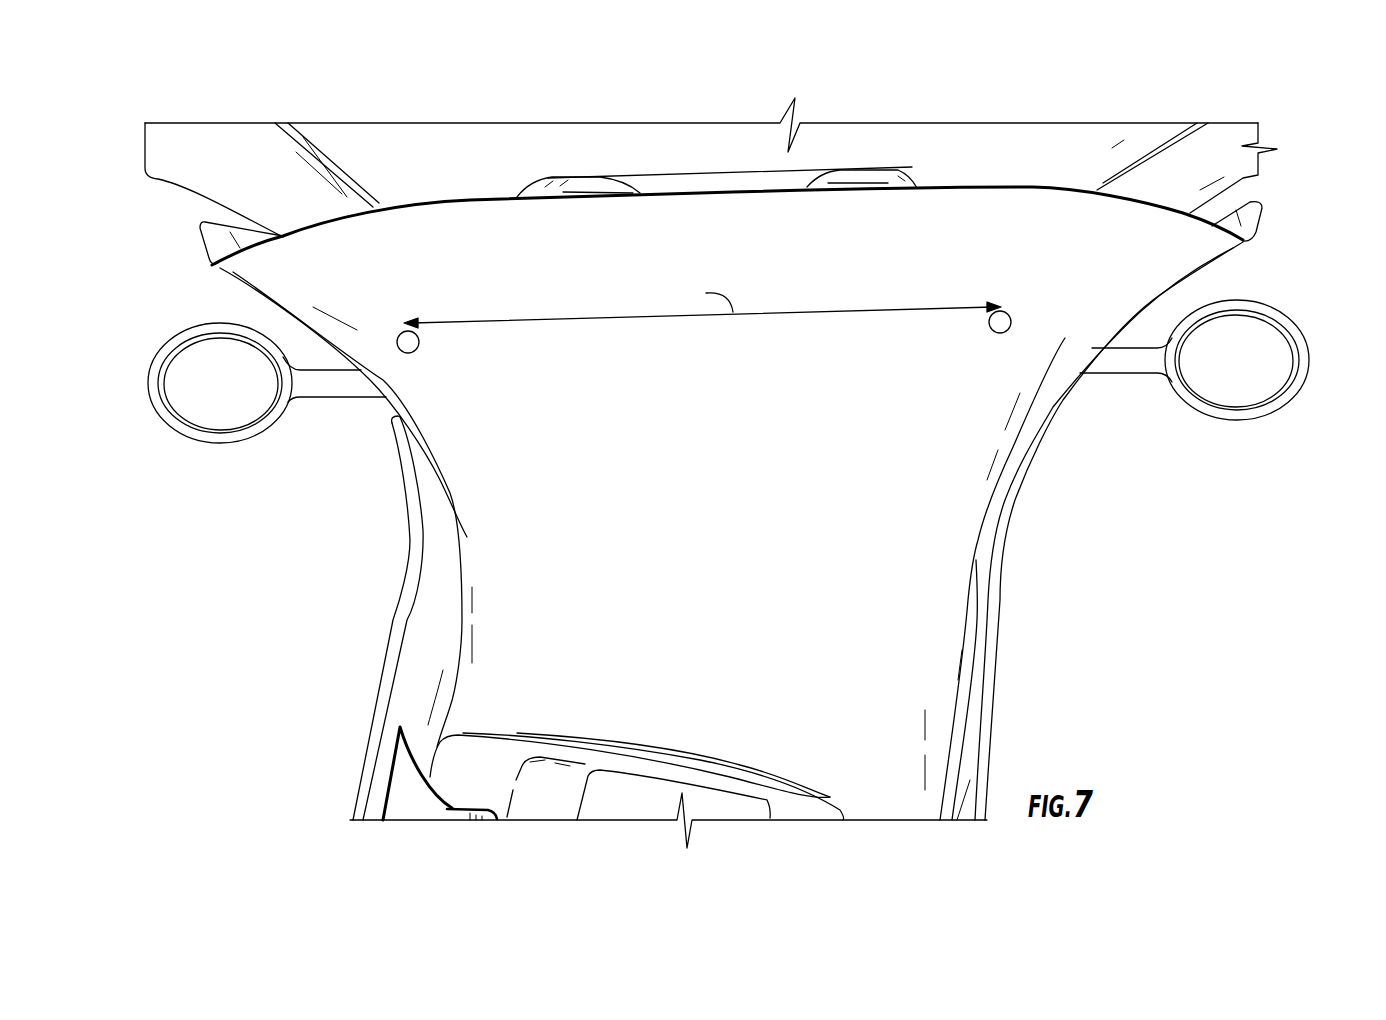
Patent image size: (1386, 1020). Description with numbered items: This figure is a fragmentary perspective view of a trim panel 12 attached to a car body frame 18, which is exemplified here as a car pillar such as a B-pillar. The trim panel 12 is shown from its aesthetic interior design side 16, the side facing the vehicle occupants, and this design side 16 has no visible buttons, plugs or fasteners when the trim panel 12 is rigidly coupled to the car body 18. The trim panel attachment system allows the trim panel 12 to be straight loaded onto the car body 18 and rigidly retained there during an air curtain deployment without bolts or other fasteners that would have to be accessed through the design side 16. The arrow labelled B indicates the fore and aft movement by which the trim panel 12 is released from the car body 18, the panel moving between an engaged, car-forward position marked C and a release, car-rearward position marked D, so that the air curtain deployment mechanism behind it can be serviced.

The trim panel 12 is at (465, 278).
The aesthetic interior design side 16 is at (721, 421).
The car body frame 18 is at (993, 154).